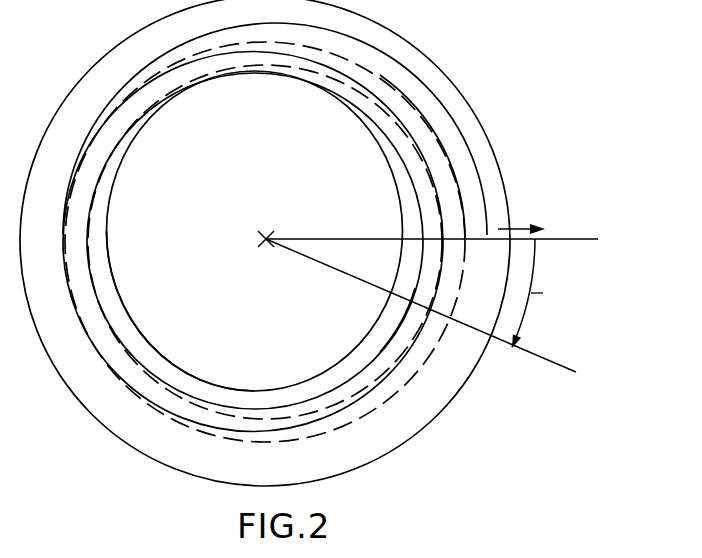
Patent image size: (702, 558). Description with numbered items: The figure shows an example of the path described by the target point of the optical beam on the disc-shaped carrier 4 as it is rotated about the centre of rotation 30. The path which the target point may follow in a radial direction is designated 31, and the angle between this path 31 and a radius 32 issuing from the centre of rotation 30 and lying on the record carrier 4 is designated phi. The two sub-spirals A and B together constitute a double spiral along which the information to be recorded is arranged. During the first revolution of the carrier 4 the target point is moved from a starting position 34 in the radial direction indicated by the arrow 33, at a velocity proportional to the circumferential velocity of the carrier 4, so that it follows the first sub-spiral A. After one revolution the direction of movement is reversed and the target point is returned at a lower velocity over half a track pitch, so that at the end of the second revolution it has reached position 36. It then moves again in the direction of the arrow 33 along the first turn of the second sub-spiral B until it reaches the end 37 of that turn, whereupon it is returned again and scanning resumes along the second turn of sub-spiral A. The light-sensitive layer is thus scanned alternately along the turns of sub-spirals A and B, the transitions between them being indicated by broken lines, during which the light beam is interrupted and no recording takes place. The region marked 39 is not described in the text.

The disc-shaped carrier 4 is at (407, 57).
The centre of rotation 30 is at (263, 234).
The radial path of the target point 31 is at (582, 237).
The radius 32 is at (576, 372).
The arrow 33 is at (527, 226).
The starting position 34 is at (403, 238).
The position reached at the end of the second revolution 36 is at (422, 239).
The end of the first turn of the second sub-spiral 37 is at (463, 238).
The annular gap 39 is at (483, 232).
The first sub-spiral A is at (357, 345).
The second sub-spiral B is at (415, 288).